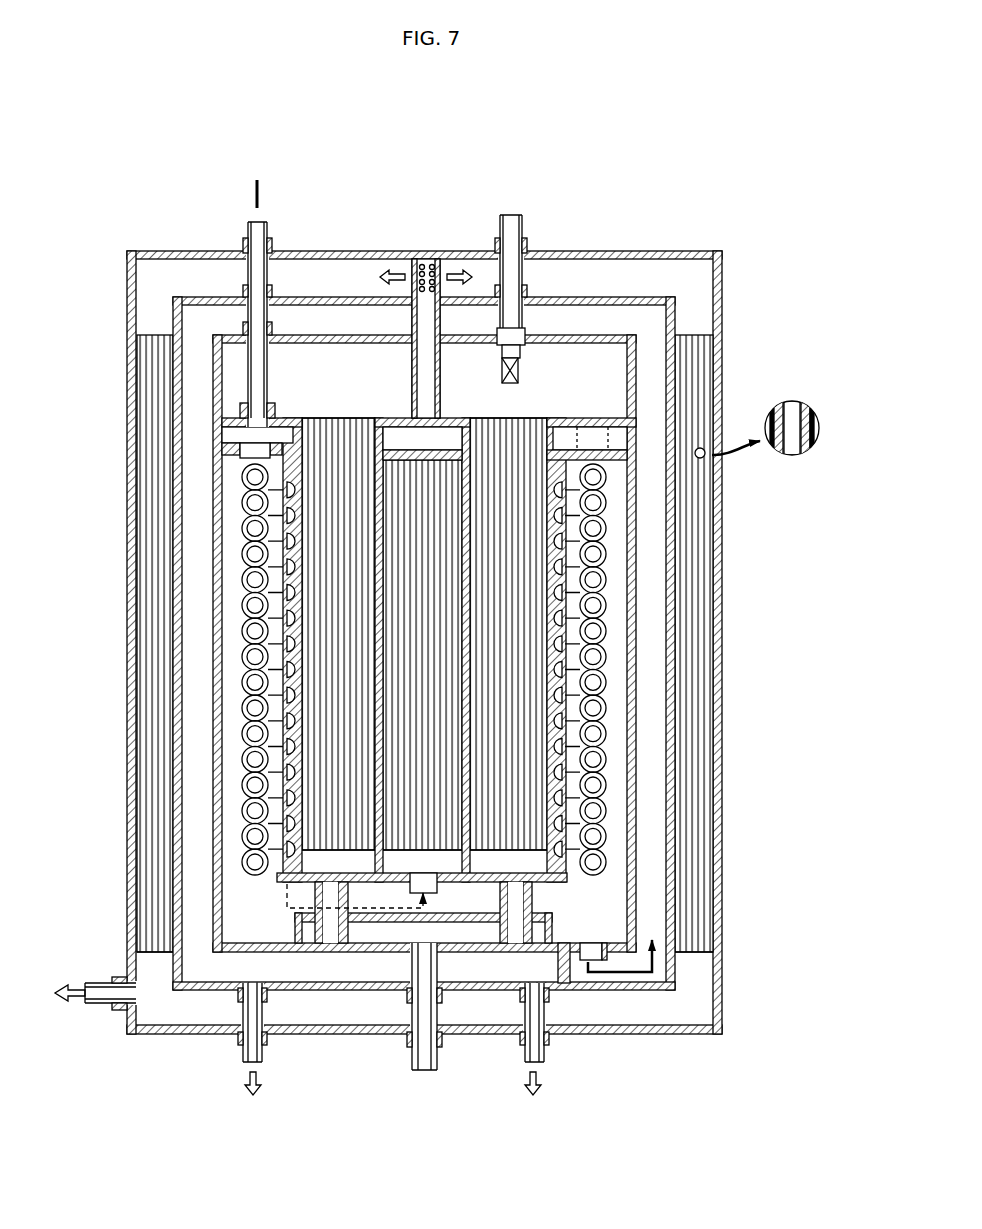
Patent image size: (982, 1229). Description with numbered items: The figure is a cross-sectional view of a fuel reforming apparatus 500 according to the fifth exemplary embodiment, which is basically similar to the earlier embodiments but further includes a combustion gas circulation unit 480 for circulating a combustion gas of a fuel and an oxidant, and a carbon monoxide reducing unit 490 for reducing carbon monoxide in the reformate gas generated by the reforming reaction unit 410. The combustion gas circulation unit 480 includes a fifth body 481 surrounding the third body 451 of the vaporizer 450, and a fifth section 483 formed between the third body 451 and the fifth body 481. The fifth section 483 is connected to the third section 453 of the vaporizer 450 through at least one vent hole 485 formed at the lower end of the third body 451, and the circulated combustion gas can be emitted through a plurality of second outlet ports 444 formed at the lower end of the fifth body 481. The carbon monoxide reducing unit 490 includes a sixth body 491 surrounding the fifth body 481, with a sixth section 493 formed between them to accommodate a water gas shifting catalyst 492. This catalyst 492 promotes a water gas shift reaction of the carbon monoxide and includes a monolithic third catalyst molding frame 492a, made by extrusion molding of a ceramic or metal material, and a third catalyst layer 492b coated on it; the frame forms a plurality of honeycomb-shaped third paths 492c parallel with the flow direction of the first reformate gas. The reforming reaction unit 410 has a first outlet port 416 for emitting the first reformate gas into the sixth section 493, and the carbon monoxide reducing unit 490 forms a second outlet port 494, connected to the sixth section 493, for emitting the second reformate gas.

The fuel reforming apparatus 500 is at (443, 177).
The first outlet port 416 is at (410, 320).
The carbon monoxide reducing unit 490 is at (732, 363).
The sixth body 491 is at (722, 672).
The water gas shifting catalyst 492 is at (705, 628).
The third catalyst molding frame 492a is at (816, 437).
The third catalyst layer 492b is at (805, 403).
The third paths 492c is at (797, 455).
The sixth section 493 is at (680, 968).
The combustion gas circulation unit 480 is at (168, 795).
The fifth body 481 is at (177, 850).
The fifth section 483 is at (190, 905).
The vaporizer 450 is at (207, 625).
The third body 451 is at (213, 573).
The third section 453 is at (237, 517).
The reforming reaction unit 410 is at (370, 684).
The second outlet ports 444 is at (243, 1003).
The vent hole 485 is at (580, 962).
The second outlet port 494 is at (122, 1007).